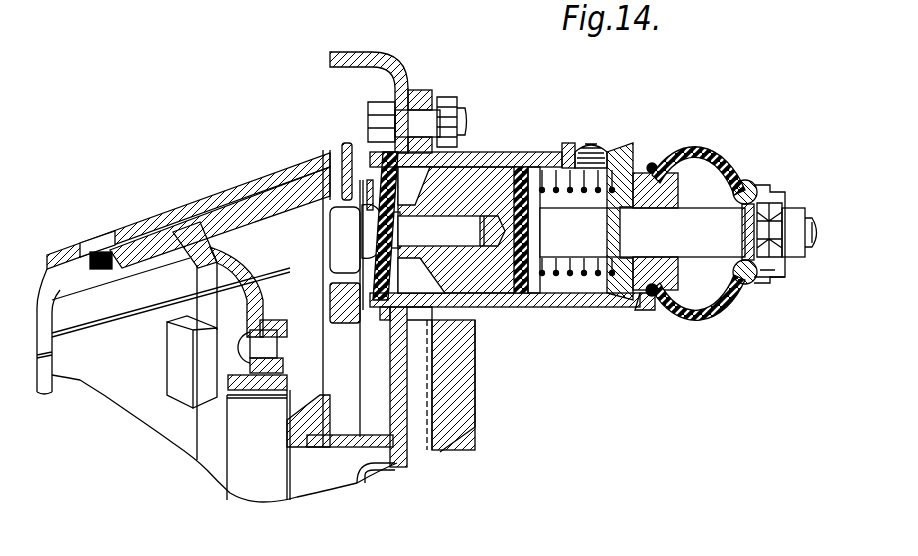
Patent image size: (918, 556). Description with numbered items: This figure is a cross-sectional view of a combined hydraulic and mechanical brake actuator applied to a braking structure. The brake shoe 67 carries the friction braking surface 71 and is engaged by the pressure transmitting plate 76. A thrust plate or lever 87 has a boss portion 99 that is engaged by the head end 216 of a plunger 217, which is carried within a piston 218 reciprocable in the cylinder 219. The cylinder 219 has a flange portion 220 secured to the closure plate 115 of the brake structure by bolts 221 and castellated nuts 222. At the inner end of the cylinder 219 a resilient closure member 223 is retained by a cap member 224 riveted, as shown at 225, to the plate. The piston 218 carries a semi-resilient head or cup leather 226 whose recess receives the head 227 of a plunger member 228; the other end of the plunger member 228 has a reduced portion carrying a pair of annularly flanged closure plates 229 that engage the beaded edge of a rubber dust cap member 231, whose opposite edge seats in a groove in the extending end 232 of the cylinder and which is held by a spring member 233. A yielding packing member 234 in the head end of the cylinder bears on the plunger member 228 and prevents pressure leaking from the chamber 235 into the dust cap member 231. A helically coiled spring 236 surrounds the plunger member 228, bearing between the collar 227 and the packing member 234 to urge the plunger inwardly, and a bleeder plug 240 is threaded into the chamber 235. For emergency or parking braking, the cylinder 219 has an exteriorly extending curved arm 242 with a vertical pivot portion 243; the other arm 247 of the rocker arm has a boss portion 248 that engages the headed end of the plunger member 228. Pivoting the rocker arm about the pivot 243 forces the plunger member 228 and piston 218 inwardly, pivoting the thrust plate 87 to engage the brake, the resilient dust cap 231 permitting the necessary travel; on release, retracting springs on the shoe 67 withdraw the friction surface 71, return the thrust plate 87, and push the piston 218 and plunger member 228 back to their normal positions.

The brake shoe 67 is at (275, 208).
The friction braking surface 71 is at (200, 213).
The pressure transmitting plate 76 is at (245, 265).
The thrust plate or lever 87 is at (330, 335).
The boss portion 99 is at (340, 243).
The bracket arm 115 is at (400, 85).
The head end 216 is at (362, 220).
The plunger 217 is at (452, 230).
The piston 218 is at (492, 307).
The cylinder 219 is at (512, 156).
The flange portion 220 is at (428, 98).
The bolts 221 is at (470, 117).
The nut 222 is at (452, 102).
The resilient closure member 223 is at (372, 158).
The cap member 224 is at (364, 192).
The rivet 225 is at (380, 335).
The semi-resilient head or cup leather 226 is at (537, 280).
The head or collar 227 is at (565, 290).
The plunger member 228 is at (643, 303).
The annularly flanged closure plates 229 is at (750, 180).
The rubber dust cap member 231 is at (710, 141).
The extending end 232 is at (690, 318).
The spring member 233 is at (653, 162).
The packing member 234 is at (628, 150).
The chamber 235 is at (605, 307).
The helically coiled spring 236 is at (567, 145).
The bleeder plug 240 is at (598, 146).
The curved arm 242 is at (773, 283).
The vertical pivot portion 243 is at (770, 190).
The arm 247 is at (808, 253).
The boss portion 248 is at (790, 215).